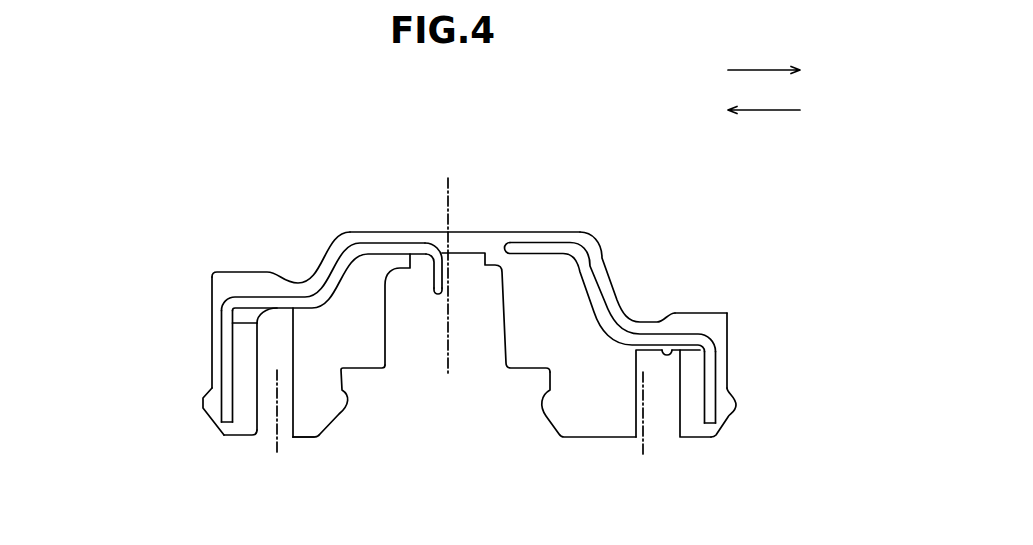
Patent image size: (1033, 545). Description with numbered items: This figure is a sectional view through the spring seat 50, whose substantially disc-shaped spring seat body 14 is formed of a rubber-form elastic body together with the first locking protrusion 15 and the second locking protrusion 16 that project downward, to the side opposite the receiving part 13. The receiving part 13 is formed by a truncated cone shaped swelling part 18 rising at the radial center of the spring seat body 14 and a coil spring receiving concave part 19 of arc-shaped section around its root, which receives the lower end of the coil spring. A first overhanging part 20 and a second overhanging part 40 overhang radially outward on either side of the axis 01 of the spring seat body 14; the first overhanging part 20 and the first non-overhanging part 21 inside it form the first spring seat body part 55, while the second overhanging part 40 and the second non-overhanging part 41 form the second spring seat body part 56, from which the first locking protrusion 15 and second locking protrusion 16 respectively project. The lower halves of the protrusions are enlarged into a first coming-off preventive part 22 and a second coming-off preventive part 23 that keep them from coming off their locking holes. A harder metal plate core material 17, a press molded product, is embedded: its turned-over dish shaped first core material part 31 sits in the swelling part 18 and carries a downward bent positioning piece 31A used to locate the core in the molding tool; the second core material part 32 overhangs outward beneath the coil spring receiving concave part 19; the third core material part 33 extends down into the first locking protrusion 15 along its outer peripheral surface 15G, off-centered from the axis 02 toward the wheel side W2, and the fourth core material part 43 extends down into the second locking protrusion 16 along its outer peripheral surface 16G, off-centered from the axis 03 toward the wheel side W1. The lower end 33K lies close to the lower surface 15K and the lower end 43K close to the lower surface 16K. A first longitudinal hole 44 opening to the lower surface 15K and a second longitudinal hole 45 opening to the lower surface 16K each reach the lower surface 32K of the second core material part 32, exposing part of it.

The spring seat 50 is at (144, 172).
The spring seat body 14 is at (603, 225).
The receiving part 13 is at (477, 232).
The swelling part 18 is at (502, 231).
The coil spring receiving concave part 19 is at (292, 269).
The core material 17 is at (469, 336).
The first core material part 31 is at (396, 247).
The positioning piece 31A is at (435, 296).
The second core material part 32 is at (250, 301).
The lower surface of second core material part 32K is at (228, 326).
The third core material part 33 is at (709, 394).
The lower end of third core material part 33K is at (713, 428).
The fourth core material part 43 is at (228, 362).
The lower end of fourth core material part 43K is at (223, 435).
The second locking protrusion 16 is at (186, 420).
The outer peripheral surface of second locking protrusion 16G is at (210, 377).
The lower surface of second locking protrusion 16K is at (306, 437).
The second spring seat body part 56 is at (289, 360).
The second overhanging part 40 is at (214, 291).
The second non-overhanging part 41 is at (330, 337).
The second longitudinal hole 45 is at (262, 430).
The second coming-off preventive part 23 is at (339, 416).
The first spring seat body part 55 is at (619, 339).
The first non-overhanging part 21 is at (587, 348).
The first overhanging part 20 is at (708, 323).
The first locking protrusion 15 is at (751, 398).
The outer peripheral surface of first locking protrusion 15G is at (727, 367).
The lower surface of first locking protrusion 15K is at (694, 438).
The first coming-off preventive part 22 is at (550, 422).
The first longitudinal hole 44 is at (659, 431).
The axis of spring seat body 01 is at (457, 259).
The axis of first locking protrusion 02 is at (633, 433).
The axis of second locking protrusion 03 is at (282, 428).
The wheel side W1 is at (741, 112).
The wheel side W2 is at (741, 75).